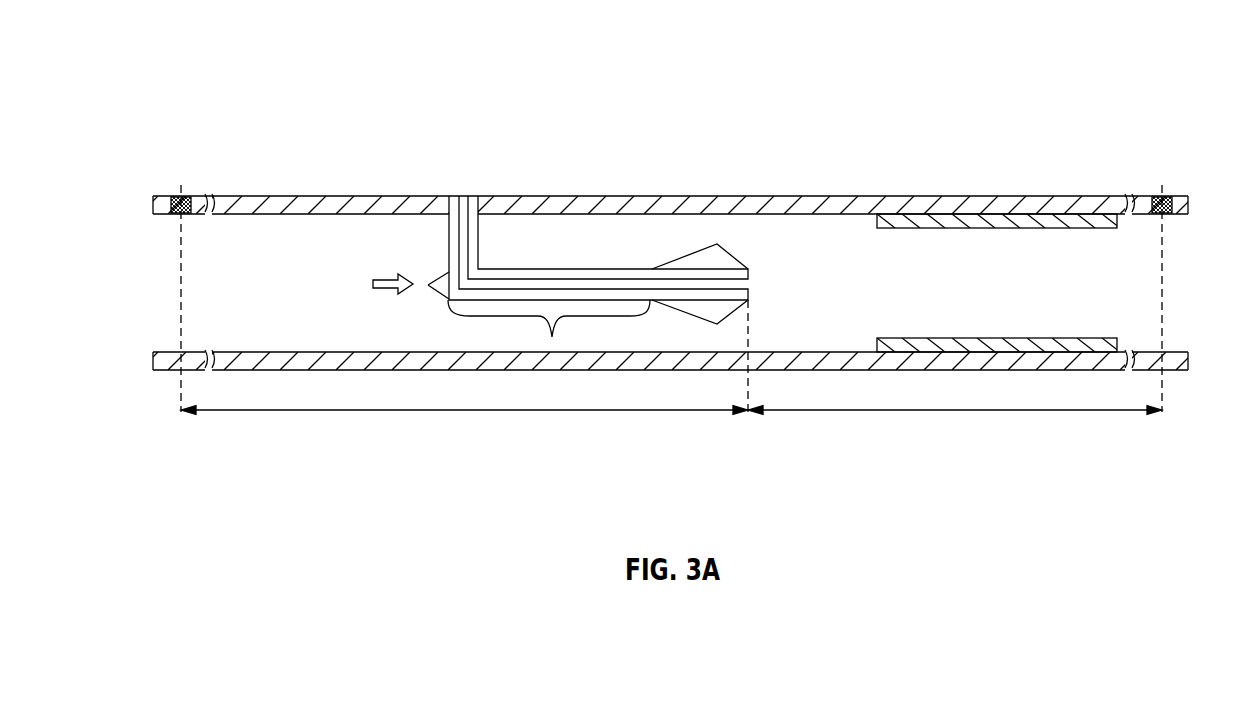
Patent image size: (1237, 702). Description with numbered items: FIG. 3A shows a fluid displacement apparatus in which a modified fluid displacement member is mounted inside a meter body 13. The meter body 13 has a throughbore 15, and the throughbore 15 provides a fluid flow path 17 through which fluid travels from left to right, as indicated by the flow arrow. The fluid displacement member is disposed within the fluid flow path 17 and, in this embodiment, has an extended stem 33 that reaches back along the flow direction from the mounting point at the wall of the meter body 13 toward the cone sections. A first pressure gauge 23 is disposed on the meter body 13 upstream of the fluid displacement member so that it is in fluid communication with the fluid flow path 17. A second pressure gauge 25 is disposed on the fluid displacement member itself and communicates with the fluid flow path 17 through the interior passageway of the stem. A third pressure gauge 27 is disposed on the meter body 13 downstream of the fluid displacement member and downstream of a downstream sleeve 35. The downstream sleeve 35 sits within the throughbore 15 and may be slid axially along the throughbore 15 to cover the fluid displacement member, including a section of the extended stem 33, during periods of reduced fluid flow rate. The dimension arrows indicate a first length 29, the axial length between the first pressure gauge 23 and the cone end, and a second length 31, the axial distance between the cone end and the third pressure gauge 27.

The meter body 13 is at (388, 196).
The throughbore 15 is at (278, 335).
The fluid flow path 17 is at (380, 274).
The first pressure gauge 23 is at (180, 195).
The second pressure gauge 25 is at (470, 194).
The third pressure gauge 27 is at (1165, 190).
The first length 29 is at (470, 412).
The second length 31 is at (950, 412).
The extended stem 33 is at (552, 337).
The downstream sleeve 35 is at (990, 222).